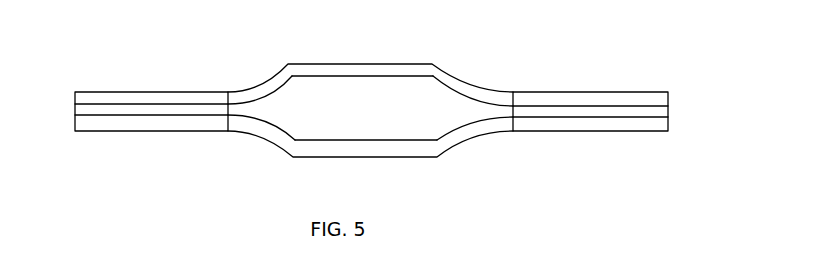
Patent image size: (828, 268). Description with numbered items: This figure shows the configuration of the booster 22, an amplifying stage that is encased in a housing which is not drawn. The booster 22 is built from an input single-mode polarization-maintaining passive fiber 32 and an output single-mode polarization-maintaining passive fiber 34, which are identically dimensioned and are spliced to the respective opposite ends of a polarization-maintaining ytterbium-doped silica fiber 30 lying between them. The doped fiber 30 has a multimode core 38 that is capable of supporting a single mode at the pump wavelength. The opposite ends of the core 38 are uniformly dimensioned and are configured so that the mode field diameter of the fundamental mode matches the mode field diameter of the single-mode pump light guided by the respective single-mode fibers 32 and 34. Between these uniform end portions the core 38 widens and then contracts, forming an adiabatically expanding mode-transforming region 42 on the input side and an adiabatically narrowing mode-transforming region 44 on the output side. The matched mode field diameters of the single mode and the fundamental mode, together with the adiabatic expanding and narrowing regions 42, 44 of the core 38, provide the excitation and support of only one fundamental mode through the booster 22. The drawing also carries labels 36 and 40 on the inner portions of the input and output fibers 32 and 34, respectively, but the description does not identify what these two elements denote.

The booster 22 is at (413, 52).
The PM Yb-doped silica fiber 30 is at (330, 66).
The input SM PM passive fiber 32 is at (125, 92).
The output SM PM passive fiber 34 is at (567, 92).
The first conductor 36 is at (145, 110).
The MM core 38 is at (367, 113).
The second conductor 40 is at (595, 112).
The expanding mode-transforming region 42 is at (273, 107).
The narrowing mode-transforming region 44 is at (452, 107).